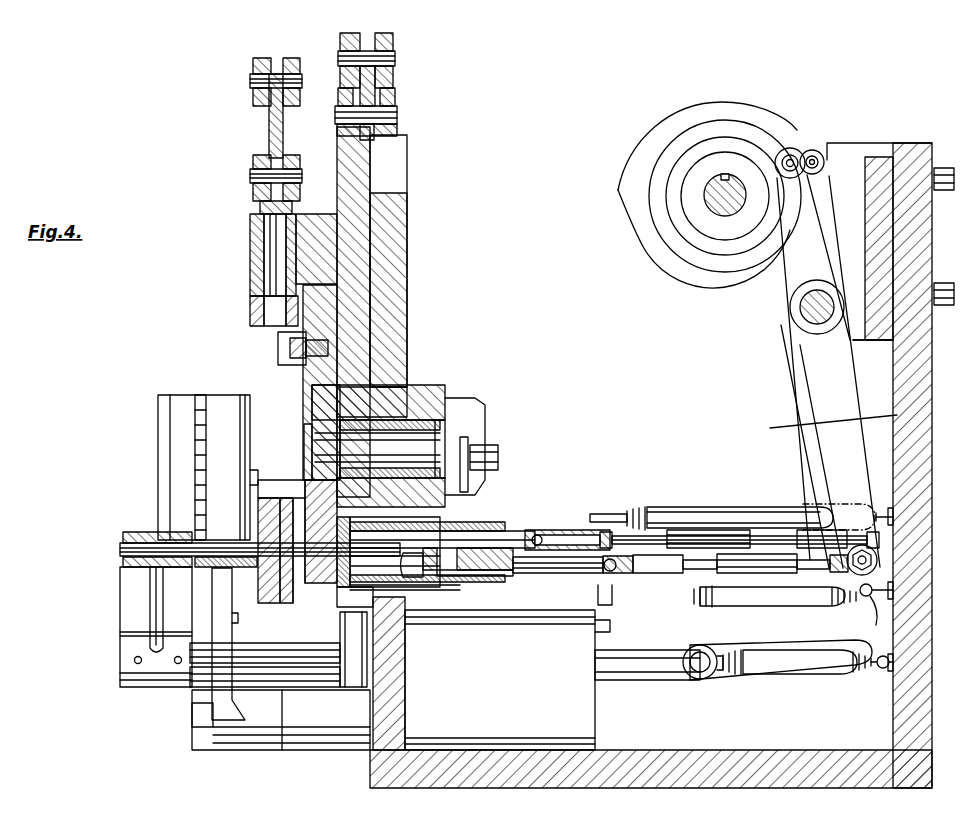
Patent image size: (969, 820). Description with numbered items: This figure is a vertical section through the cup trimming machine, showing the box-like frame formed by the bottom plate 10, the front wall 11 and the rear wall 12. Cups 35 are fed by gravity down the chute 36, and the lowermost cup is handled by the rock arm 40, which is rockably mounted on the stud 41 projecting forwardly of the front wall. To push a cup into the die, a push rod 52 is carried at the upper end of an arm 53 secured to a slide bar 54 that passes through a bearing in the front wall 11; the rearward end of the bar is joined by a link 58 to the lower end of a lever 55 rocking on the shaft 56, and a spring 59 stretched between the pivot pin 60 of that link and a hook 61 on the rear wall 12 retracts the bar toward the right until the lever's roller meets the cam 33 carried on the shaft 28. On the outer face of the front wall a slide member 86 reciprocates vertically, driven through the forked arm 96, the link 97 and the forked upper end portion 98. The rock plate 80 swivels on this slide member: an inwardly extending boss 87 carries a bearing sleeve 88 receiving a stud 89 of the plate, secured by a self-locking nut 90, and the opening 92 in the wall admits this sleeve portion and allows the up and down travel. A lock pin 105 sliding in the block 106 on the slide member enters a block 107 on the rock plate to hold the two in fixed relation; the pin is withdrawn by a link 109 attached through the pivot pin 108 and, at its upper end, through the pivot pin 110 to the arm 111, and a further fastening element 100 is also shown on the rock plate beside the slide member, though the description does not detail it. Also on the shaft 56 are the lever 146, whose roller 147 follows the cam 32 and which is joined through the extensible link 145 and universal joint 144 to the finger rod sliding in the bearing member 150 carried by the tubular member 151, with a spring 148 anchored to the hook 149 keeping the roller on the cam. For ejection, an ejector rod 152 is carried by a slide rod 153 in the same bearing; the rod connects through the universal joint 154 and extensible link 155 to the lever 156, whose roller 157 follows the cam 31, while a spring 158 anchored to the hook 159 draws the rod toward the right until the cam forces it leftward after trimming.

The bottom plate 10 is at (740, 755).
The front wall 11 is at (385, 270).
The rear wall 12 is at (808, 430).
The shaft 28 is at (737, 183).
The cam 31 is at (636, 190).
The cam 32 is at (712, 270).
The cam 33 is at (695, 112).
The cup 35 is at (196, 440).
The chute 36 is at (218, 410).
The rock arm 40 is at (222, 658).
The stud 41 is at (192, 718).
The push rod 52 is at (137, 538).
The arm 53 is at (135, 606).
The slide bar 54 is at (283, 652).
The lever 55 is at (852, 614).
The shaft 56 is at (800, 318).
The link 58 is at (770, 648).
The spring 59 is at (765, 676).
The pivot pin 60 is at (697, 680).
The hook 61 is at (882, 670).
The rock plate 80 is at (315, 403).
The slide member 86 is at (360, 352).
The boss 87 is at (418, 393).
The bearing sleeve 88 is at (450, 418).
The stud 89 is at (445, 448).
The nut 90 is at (480, 450).
The opening 92 is at (392, 313).
The arm 96 is at (392, 40).
The link 97 is at (378, 80).
The forked upper end portion 98 is at (392, 130).
The screw 100 is at (278, 350).
The lock pin 105 is at (268, 242).
The block 106 is at (318, 218).
The block 107 is at (258, 312).
The pivot pin 108 is at (250, 174).
The link 109 is at (270, 122).
The pivot pin 110 is at (250, 82).
The arm 111 is at (290, 58).
The universal joint 144 is at (540, 535).
The extensible link 145 is at (590, 528).
The lever 146 is at (812, 482).
The roller 147 is at (818, 150).
The spring 148 is at (672, 510).
The hook 149 is at (884, 506).
The bearing member 150 is at (500, 526).
The tubular member 151 is at (470, 582).
The ejector rod 152 is at (410, 578).
The slide rod 153 is at (545, 574).
The universal joint 154 is at (605, 572).
The extensible link 155 is at (650, 575).
The lever 156 is at (845, 447).
The roller 157 is at (795, 148).
The spring 158 is at (730, 600).
The hook 159 is at (886, 614).